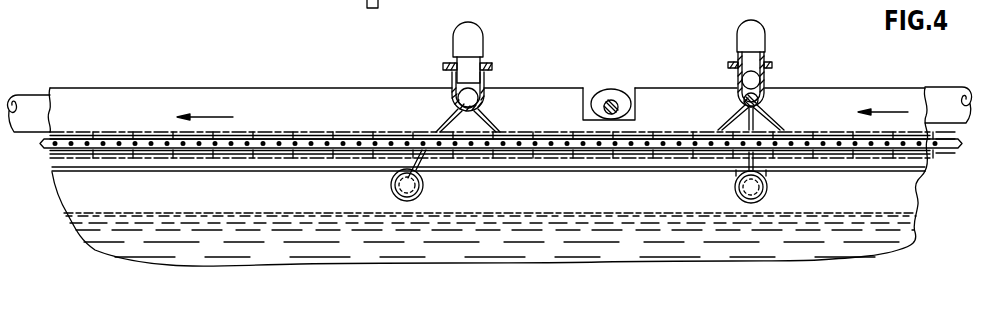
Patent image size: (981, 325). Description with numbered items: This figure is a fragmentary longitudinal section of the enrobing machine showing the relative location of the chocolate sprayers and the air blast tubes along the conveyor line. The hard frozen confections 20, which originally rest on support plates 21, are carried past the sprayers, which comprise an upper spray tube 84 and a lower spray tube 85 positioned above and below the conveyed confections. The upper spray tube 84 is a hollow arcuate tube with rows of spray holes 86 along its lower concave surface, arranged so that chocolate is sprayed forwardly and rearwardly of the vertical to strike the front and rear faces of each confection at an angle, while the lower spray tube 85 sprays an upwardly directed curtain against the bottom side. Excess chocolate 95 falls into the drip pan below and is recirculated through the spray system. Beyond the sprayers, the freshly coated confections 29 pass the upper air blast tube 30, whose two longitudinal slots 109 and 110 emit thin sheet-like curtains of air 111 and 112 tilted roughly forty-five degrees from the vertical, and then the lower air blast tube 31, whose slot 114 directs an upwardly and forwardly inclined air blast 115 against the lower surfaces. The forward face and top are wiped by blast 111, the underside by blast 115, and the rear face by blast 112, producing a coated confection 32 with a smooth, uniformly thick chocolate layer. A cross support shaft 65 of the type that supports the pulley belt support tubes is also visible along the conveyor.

The hard frozen confection 20 is at (857, 133).
The support plate 21 is at (378, 8).
The freshly coated confection 29 is at (546, 133).
The upper air blast tube 30 is at (462, 77).
The lower air blast tube 31 is at (411, 179).
The coated confection 32 is at (317, 132).
The cross support shaft 65 is at (614, 101).
The upper spray tube 84 is at (760, 75).
The lower spray tube 85 is at (768, 191).
The spray holes 86 is at (748, 108).
The chocolate 95 is at (541, 228).
The longitudinal slot 109 is at (478, 104).
The longitudinal slot 110 is at (452, 108).
The air curtain 111 is at (494, 125).
The air curtain 112 is at (439, 123).
The longitudinal slot 114 is at (417, 186).
The air blast 115 is at (426, 160).